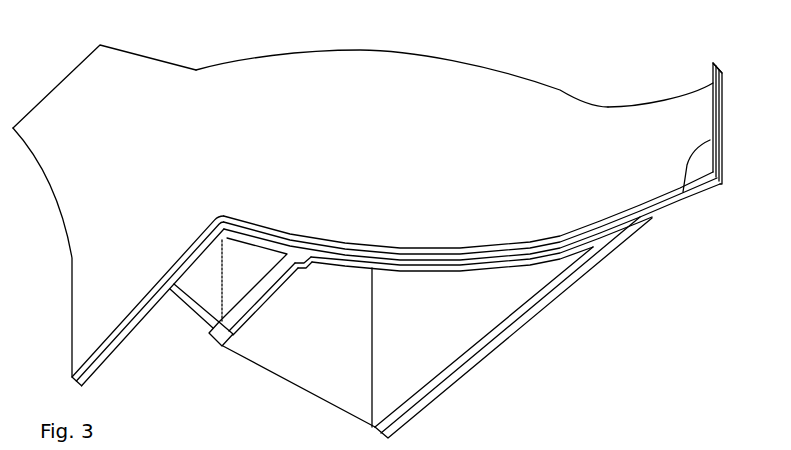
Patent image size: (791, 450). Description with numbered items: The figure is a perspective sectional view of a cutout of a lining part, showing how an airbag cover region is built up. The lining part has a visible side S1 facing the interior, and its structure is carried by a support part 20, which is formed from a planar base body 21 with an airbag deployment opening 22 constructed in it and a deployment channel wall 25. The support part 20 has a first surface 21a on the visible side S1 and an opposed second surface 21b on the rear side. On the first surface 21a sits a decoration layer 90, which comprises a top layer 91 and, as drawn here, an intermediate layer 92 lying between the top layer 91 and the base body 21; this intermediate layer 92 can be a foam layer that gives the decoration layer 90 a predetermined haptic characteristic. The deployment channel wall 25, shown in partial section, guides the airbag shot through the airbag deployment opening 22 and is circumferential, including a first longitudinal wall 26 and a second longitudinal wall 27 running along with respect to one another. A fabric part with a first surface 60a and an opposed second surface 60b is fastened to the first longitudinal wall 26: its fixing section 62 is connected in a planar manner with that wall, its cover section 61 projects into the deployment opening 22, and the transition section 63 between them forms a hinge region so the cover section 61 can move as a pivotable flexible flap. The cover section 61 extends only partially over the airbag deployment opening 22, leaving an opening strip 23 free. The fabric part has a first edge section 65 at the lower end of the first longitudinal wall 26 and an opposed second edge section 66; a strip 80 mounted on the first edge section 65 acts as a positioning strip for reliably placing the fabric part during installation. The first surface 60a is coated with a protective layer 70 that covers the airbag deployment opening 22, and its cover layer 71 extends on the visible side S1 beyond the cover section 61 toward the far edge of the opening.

The visible side S1 is at (380, 163).
The support part 20 is at (669, 218).
The base body 21 is at (699, 198).
The first surface 21a is at (722, 143).
The second surface 21b is at (718, 187).
The airbag deployment opening 22 is at (537, 278).
The opening strip 23 is at (555, 272).
The deployment channel wall 25 is at (577, 283).
The first longitudinal wall 26 is at (202, 316).
The second longitudinal wall 27 is at (495, 350).
The first surface 60a is at (417, 268).
The second surface 60b is at (414, 274).
The cover section 61 is at (393, 273).
The fixing section 62 is at (271, 296).
The transition section 63 is at (325, 268).
The first edge section 65 is at (235, 336).
The second edge section 66 is at (521, 264).
The protective layer 70 is at (248, 317).
The cover layer 71 is at (549, 262).
The strip 80 is at (207, 337).
The decoration layer 90 is at (721, 73).
The top layer 91 is at (712, 88).
The intermediate layer 92 is at (586, 245).